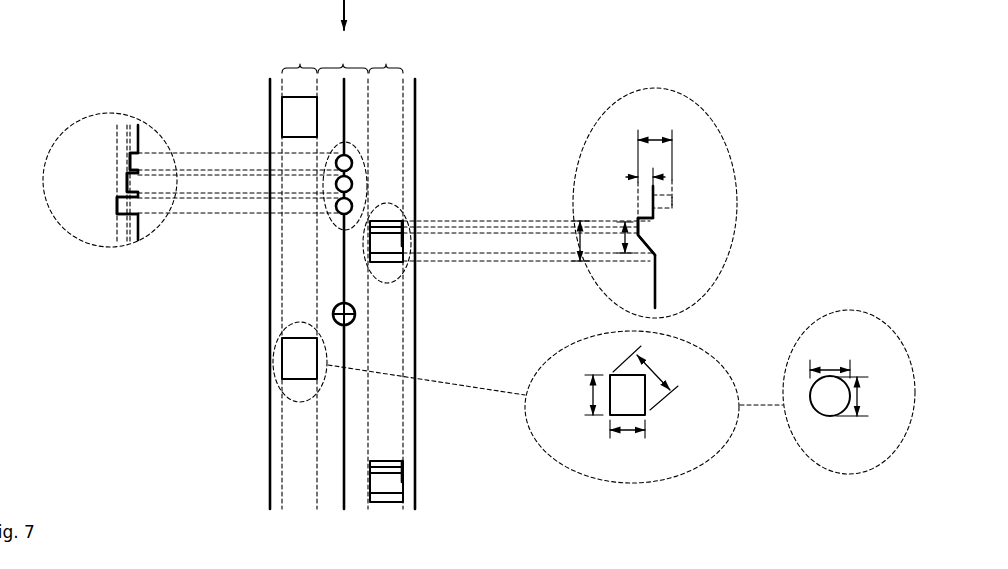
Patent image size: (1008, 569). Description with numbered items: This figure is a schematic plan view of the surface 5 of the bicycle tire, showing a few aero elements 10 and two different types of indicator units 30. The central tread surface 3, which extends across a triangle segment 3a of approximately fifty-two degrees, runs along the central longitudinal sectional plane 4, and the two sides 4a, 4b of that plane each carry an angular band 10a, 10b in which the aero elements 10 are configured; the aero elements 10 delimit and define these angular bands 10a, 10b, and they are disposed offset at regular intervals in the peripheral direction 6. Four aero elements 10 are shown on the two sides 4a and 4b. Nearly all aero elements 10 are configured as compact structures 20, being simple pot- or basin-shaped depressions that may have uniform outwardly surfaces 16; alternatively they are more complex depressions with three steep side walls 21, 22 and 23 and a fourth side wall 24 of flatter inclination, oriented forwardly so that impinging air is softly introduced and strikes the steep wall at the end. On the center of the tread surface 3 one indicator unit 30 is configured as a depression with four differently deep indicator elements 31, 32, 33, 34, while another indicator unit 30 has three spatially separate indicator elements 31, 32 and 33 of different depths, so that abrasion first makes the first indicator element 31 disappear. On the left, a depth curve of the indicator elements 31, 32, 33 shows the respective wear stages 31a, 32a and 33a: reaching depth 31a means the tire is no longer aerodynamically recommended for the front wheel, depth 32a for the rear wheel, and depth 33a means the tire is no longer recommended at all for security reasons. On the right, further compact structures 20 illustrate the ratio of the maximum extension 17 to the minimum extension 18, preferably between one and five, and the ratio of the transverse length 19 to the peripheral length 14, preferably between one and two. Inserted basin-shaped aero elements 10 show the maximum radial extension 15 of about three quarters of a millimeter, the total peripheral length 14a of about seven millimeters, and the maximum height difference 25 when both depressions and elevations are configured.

The tread surface 3 is at (334, 521).
The triangle segment 3a is at (343, 55).
The central longitudinal sectional plane 4 is at (343, 453).
The side 4a is at (284, 418).
The side 4b is at (407, 410).
The surface 5 is at (657, 288).
The peripheral direction 6 is at (347, 16).
The aero element 10 is at (282, 116).
The angular band 10a is at (299, 57).
The angular band 10b is at (250, 58).
The length in the peripheral direction 14 is at (625, 244).
The total length 14a is at (580, 244).
The maximum radial extension 15 is at (648, 173).
The uniform outwardly surface 16 is at (288, 368).
The maximum extension 17 is at (660, 373).
The minimum extension 18 is at (628, 434).
The length in the transverse direction 19 is at (826, 366).
The compact structure 20 is at (266, 96).
The side wall 21 is at (405, 477).
The side wall 22 is at (380, 460).
The side wall 23 is at (370, 490).
The side wall 24 is at (390, 494).
The maximum height difference 25 is at (651, 136).
The indicator unit 30 is at (375, 176).
The first indicator element 31 is at (336, 163).
The second indicator element 32 is at (336, 184).
The third indicator element 33 is at (337, 209).
The wear stage 31a is at (128, 146).
The wear stage 32a is at (122, 168).
The wear stage 33a is at (116, 189).
The indicator element 34 is at (333, 315).